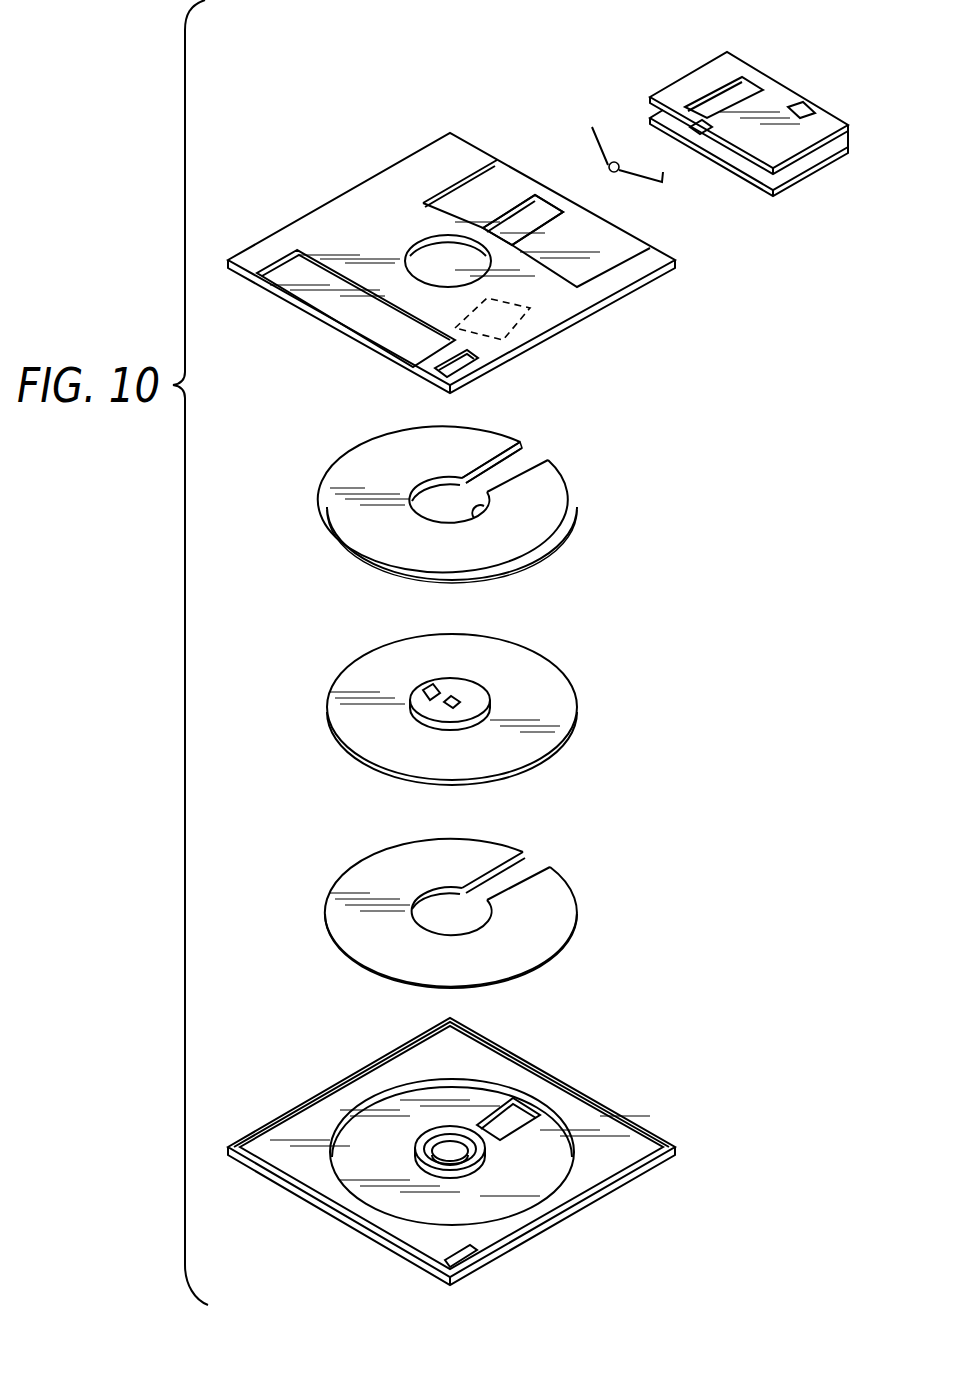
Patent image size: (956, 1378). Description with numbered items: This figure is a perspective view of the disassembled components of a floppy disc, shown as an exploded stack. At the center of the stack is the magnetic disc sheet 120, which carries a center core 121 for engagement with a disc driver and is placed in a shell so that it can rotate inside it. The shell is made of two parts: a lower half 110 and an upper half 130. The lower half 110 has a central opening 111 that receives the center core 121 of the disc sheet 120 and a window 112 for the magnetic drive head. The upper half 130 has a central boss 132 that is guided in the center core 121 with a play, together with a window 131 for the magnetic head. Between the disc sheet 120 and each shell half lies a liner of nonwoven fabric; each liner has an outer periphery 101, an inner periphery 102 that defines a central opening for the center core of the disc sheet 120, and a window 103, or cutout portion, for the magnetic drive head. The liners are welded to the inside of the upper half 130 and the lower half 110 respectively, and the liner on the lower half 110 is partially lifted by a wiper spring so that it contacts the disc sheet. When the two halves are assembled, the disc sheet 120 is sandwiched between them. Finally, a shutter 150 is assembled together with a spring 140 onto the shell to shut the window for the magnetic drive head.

The outer periphery 101 is at (505, 577).
The central opening 102 is at (487, 505).
The window 103 is at (532, 462).
The lower half 110 is at (430, 142).
The central opening 111 is at (420, 240).
The window 112 is at (523, 220).
The magnetic disc sheet 120 is at (560, 698).
The center core 121 is at (475, 698).
The upper half 130 is at (625, 1110).
The window 131 is at (520, 1115).
The central boss 132 is at (473, 1163).
The spring 140 is at (593, 125).
The shutter 150 is at (702, 70).